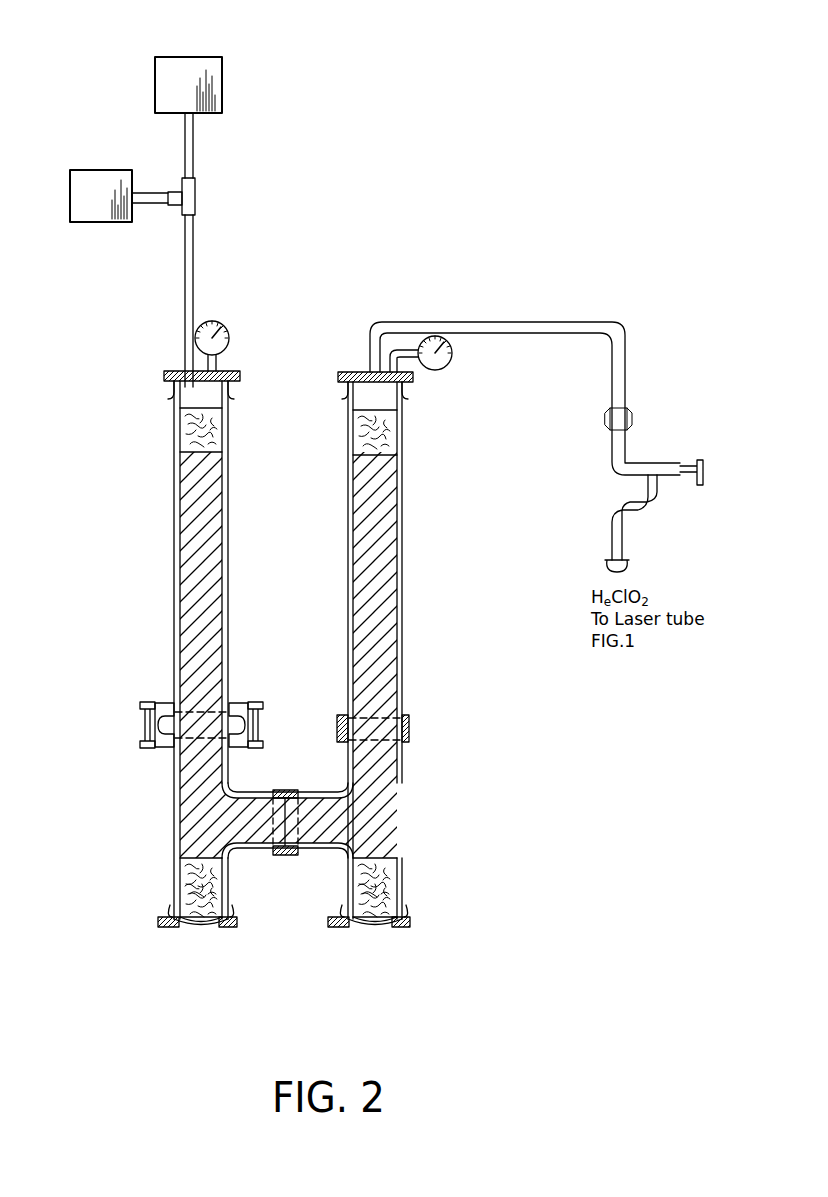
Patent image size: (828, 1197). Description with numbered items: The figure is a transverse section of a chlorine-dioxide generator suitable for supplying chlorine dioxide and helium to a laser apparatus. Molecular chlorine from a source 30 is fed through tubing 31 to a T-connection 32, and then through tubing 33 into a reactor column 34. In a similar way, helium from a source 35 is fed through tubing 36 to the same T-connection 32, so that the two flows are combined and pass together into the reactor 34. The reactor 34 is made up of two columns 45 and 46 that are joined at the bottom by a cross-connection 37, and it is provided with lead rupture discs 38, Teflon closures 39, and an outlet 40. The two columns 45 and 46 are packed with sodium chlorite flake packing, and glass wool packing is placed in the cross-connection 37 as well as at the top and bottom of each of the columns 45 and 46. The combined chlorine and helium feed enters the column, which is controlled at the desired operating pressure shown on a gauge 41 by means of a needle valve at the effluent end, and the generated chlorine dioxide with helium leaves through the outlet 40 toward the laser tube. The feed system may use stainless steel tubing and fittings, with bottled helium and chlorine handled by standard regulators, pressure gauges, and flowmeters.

The source 30 is at (200, 57).
The tubing 31 is at (193, 150).
The T-connection 32 is at (195, 198).
The tubing 33 is at (193, 285).
The reactor column 34 is at (291, 653).
The source 35 is at (130, 170).
The tubing 36 is at (160, 205).
The cross-connection 37 is at (255, 796).
The lead rupture discs 38 is at (202, 925).
The Teflon closures 39 is at (164, 383).
The outlet 40 is at (366, 344).
The gauge 41 is at (229, 333).
The column 45 is at (174, 557).
The column 46 is at (402, 607).